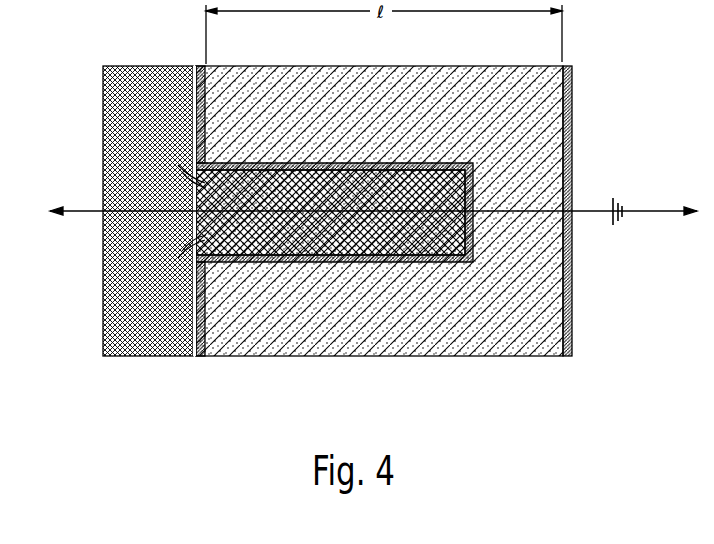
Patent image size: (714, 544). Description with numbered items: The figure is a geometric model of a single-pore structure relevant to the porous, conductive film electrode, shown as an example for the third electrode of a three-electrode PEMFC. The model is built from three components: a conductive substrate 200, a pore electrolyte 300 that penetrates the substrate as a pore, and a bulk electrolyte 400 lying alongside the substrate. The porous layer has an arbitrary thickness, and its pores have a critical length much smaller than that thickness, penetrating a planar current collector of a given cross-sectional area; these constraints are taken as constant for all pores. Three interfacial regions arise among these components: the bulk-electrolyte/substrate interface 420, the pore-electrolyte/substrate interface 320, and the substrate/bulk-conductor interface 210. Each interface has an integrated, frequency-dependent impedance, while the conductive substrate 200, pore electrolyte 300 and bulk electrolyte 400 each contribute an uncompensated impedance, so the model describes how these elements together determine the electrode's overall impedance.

The conductive substrate 200 is at (328, 82).
The substrate/bulk-conductor interface 210 is at (565, 65).
The pore electrolyte 300 is at (358, 260).
The pore-electrolyte/substrate interface 320 is at (471, 262).
The bulk electrolyte 400 is at (128, 77).
The bulk-electrolyte/substrate interface 420 is at (199, 358).